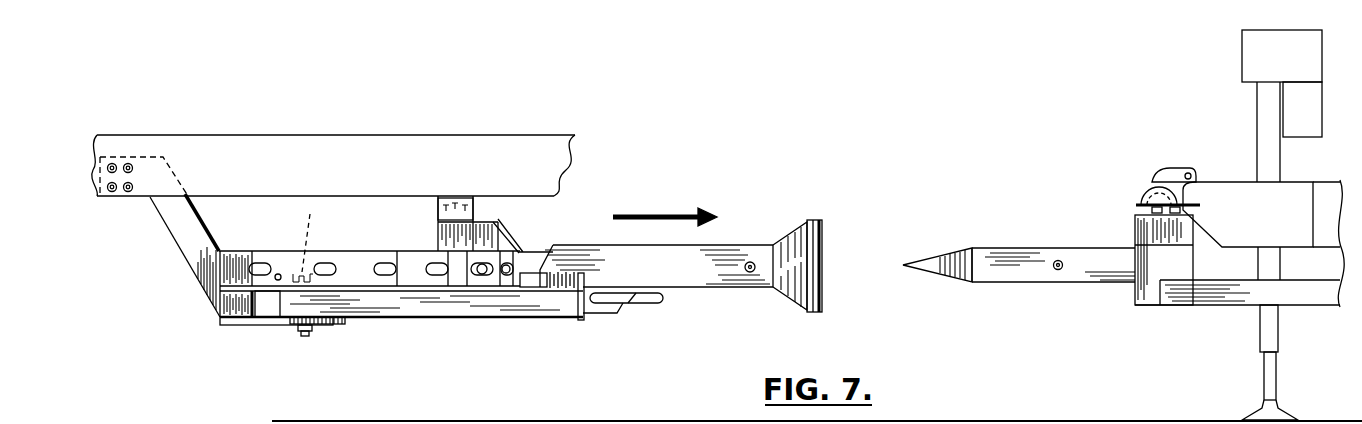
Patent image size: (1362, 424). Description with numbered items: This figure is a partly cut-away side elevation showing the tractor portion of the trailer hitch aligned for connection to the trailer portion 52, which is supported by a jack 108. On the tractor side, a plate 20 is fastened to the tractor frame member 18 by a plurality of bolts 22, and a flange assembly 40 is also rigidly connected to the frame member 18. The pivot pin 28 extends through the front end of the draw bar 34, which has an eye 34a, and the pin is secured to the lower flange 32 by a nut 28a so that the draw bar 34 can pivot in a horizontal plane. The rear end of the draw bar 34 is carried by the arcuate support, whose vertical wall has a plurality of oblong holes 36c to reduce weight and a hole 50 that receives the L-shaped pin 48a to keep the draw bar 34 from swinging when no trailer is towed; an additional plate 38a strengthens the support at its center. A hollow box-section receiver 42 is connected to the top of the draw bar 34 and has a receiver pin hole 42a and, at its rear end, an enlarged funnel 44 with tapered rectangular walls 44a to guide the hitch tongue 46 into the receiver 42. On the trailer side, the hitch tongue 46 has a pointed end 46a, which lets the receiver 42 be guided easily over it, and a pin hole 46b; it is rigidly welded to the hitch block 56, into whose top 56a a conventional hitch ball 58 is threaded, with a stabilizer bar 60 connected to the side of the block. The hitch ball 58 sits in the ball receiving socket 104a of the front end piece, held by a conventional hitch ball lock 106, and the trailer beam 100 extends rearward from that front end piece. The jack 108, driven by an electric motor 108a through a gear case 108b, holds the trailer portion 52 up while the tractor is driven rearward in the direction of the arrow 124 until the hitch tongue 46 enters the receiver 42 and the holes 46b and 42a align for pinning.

The tractor frame member 18 is at (279, 148).
The plate 20 is at (197, 258).
The bolt 22 is at (112, 163).
The pivot pin 28 is at (312, 366).
The nut 28a is at (310, 330).
The flange 32 is at (235, 325).
The draw bar 34 is at (426, 318).
The eye 34a is at (280, 304).
The oblong hole 36c is at (262, 262).
The additional plate 38a is at (507, 240).
The flange assembly 40 is at (490, 218).
The receiver 42 is at (723, 245).
The receiver pin hole 42a is at (751, 274).
The funnel 44 is at (808, 218).
The tapered rectangular wall 44a is at (824, 300).
The hitch tongue 46 is at (990, 284).
The pointed end 46a is at (940, 266).
The pin hole 46b is at (1058, 272).
The L-shaped pin 48a is at (580, 312).
The hole 50 is at (278, 273).
The trailer portion 52 is at (1047, 226).
The hitch block 56 is at (1155, 307).
The top of hitch block 56a is at (1133, 232).
The hitch ball 58 is at (1178, 190).
The stabilizer bar 60 is at (1257, 285).
The trailer beam 100 is at (1323, 197).
The ball receiving socket 104a is at (1145, 193).
The hitch ball lock 106 is at (1170, 170).
The jack 108 is at (1242, 117).
The electric motor 108a is at (1303, 113).
The gear case 108b is at (1260, 48).
The arrow 124 is at (623, 214).